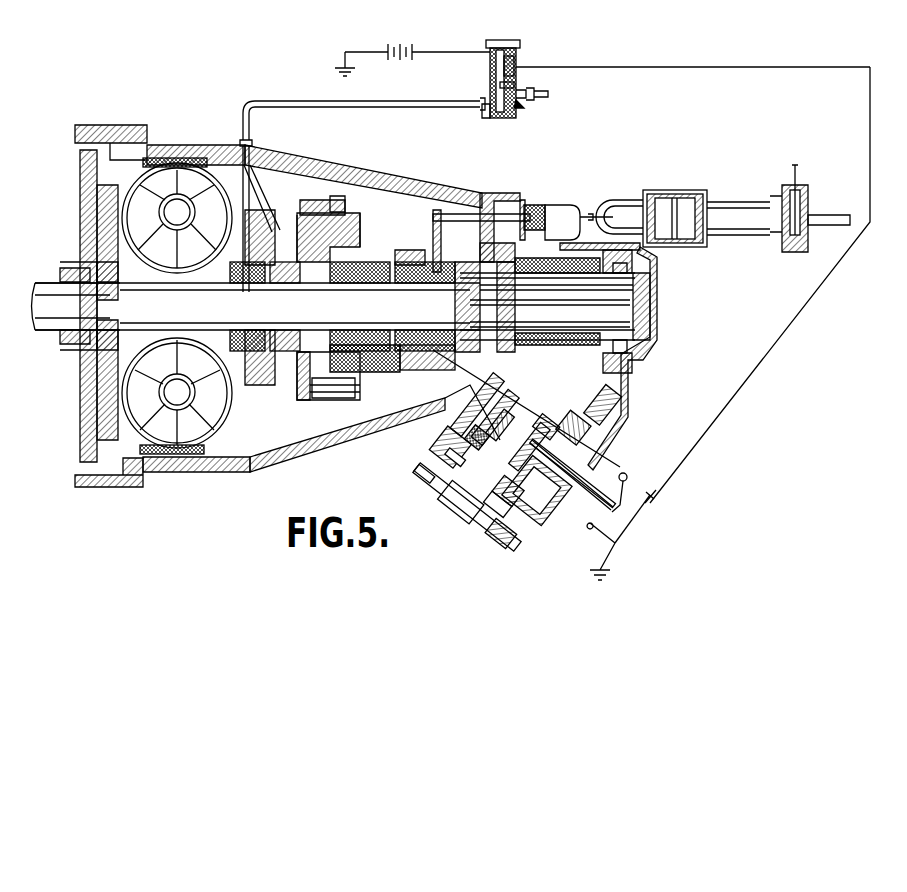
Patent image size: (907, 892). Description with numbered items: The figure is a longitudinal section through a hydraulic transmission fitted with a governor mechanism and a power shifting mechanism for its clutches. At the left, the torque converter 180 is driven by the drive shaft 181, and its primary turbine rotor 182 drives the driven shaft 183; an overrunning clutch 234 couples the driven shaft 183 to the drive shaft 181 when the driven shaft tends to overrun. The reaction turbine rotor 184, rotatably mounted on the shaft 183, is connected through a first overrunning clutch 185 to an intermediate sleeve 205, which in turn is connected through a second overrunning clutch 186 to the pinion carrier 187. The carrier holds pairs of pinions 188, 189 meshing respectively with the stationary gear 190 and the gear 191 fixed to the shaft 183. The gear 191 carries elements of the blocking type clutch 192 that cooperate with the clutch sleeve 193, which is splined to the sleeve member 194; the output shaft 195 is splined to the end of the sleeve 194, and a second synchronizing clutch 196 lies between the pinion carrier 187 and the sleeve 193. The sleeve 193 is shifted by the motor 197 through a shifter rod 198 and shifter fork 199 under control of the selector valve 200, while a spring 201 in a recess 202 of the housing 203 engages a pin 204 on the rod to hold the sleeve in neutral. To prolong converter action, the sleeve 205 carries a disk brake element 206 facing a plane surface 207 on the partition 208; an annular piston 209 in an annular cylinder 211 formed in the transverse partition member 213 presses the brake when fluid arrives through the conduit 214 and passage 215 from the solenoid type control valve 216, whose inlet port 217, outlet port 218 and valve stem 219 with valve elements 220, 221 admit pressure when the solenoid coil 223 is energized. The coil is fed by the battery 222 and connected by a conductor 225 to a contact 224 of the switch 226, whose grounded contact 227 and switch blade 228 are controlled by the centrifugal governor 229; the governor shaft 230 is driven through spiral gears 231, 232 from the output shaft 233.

The torque converter 180 is at (188, 158).
The drive shaft 181 is at (58, 268).
The primary turbine rotor 182 is at (160, 182).
The driven shaft 183 is at (60, 330).
The reaction turbine rotor 184 is at (188, 262).
The overrunning clutch 185 is at (248, 283).
The overrunning clutch 186 is at (298, 284).
The pinion carrier 187 is at (360, 222).
The pinion 188 is at (314, 202).
The pinion 189 is at (338, 200).
The stationary gear 190 is at (305, 368).
The gear 191 is at (350, 360).
The blocking type clutch 192 is at (372, 283).
The clutch sleeve 193 is at (430, 283).
The sleeve member 194 is at (437, 345).
The output shaft 195 is at (625, 296).
The second synchronizing clutch 196 is at (408, 250).
The motor 197 is at (665, 190).
The shifter rod 198 is at (465, 214).
The shifter fork 199 is at (441, 240).
The selector valve 200 is at (808, 210).
The spring 201 is at (560, 205).
The recess 202 is at (560, 212).
The housing 203 is at (425, 178).
The pin 204 is at (532, 205).
The intermediate sleeve 205 is at (300, 312).
The disk brake element 206 is at (262, 440).
The plane surface 207 is at (282, 185).
The partition 208 is at (262, 215).
The annular piston 209 is at (214, 378).
The annular cylinder 211 is at (185, 380).
The transverse partition member 213 is at (235, 438).
The conduit 214 is at (390, 100).
The passage 215 is at (243, 175).
The solenoid type control valve 216 is at (518, 88).
The inlet port 217 is at (518, 100).
The outlet port 218 is at (487, 118).
The valve stem 219 is at (516, 62).
The valve element 220 is at (500, 70).
The valve element 221 is at (500, 88).
The battery 222 is at (403, 42).
The solenoid coil 223 is at (493, 50).
The contact 224 is at (652, 500).
The conductor 225 is at (716, 420).
The switch 226 is at (641, 535).
The contact 227 is at (620, 548).
The switch blade 228 is at (635, 500).
The centrifugal governor 229 is at (618, 474).
The governor shaft 230 is at (597, 497).
The spiral gear 231 is at (545, 445).
The spiral gear 232 is at (500, 430).
The output shaft 233 is at (482, 490).
The overrunning clutch 234 is at (120, 275).